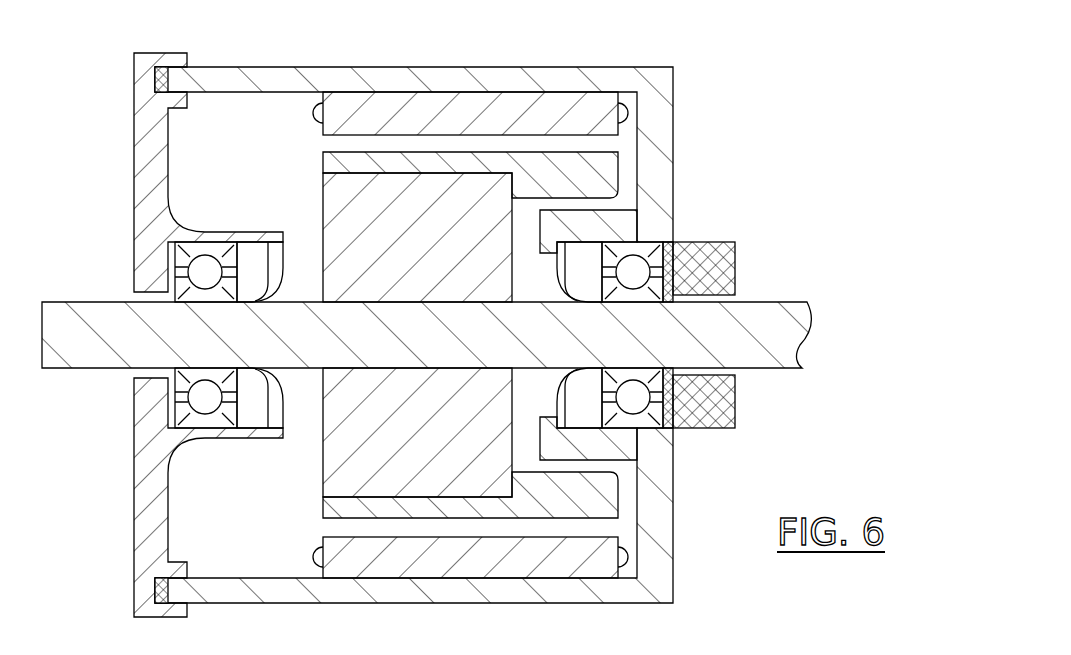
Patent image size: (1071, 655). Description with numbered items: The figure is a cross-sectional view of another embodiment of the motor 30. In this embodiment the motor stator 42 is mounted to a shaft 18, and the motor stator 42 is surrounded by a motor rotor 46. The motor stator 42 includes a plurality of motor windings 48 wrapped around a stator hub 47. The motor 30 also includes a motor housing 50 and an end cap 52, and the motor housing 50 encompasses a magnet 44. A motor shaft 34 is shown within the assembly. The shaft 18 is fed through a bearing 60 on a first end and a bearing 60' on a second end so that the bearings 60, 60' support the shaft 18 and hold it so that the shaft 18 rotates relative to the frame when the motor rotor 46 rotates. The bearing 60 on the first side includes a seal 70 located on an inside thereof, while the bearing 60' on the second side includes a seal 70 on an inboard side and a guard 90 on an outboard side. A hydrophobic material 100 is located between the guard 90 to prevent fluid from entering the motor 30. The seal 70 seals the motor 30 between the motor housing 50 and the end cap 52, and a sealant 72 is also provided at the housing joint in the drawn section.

The shaft 18 is at (492, 298).
The motor 30 is at (487, 325).
The motor shaft 34 is at (762, 312).
The motor stator 42 is at (622, 92).
The magnet 44 is at (345, 163).
The motor rotor 46 is at (323, 207).
The stator hub 47 is at (347, 100).
The motor windings 48 is at (518, 325).
The motor housing 50 is at (483, 78).
The end cap 52 is at (134, 131).
The bearing 60 is at (157, 335).
The bearing 60' is at (688, 360).
The seal 70 is at (558, 252).
The sealant 72 is at (160, 590).
The guard 90 is at (713, 252).
The hydrophobic material 100 is at (665, 395).